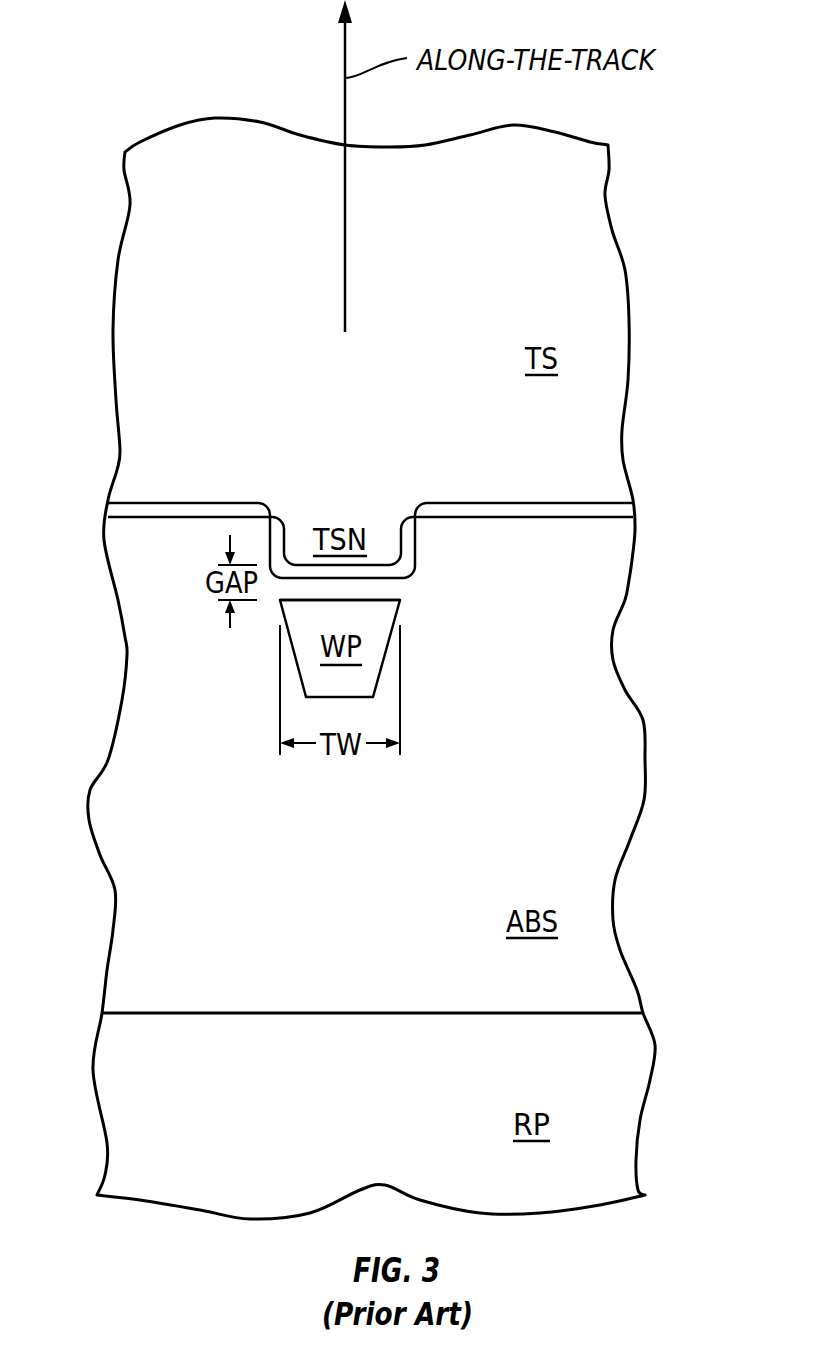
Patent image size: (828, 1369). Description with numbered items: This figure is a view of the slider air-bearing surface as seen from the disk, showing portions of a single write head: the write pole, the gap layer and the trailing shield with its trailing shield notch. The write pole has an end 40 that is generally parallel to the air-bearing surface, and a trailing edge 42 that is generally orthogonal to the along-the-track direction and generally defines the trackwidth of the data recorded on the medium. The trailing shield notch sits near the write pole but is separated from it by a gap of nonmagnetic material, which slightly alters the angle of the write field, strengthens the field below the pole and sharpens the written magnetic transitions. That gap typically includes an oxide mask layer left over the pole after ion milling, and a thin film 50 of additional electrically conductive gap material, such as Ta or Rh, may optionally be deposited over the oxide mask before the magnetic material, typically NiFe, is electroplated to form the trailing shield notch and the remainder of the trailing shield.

The end of the write pole 40 is at (363, 678).
The trailing edge of the write pole 42 is at (343, 598).
The thin film of electrically conductive gap material 50 is at (552, 502).